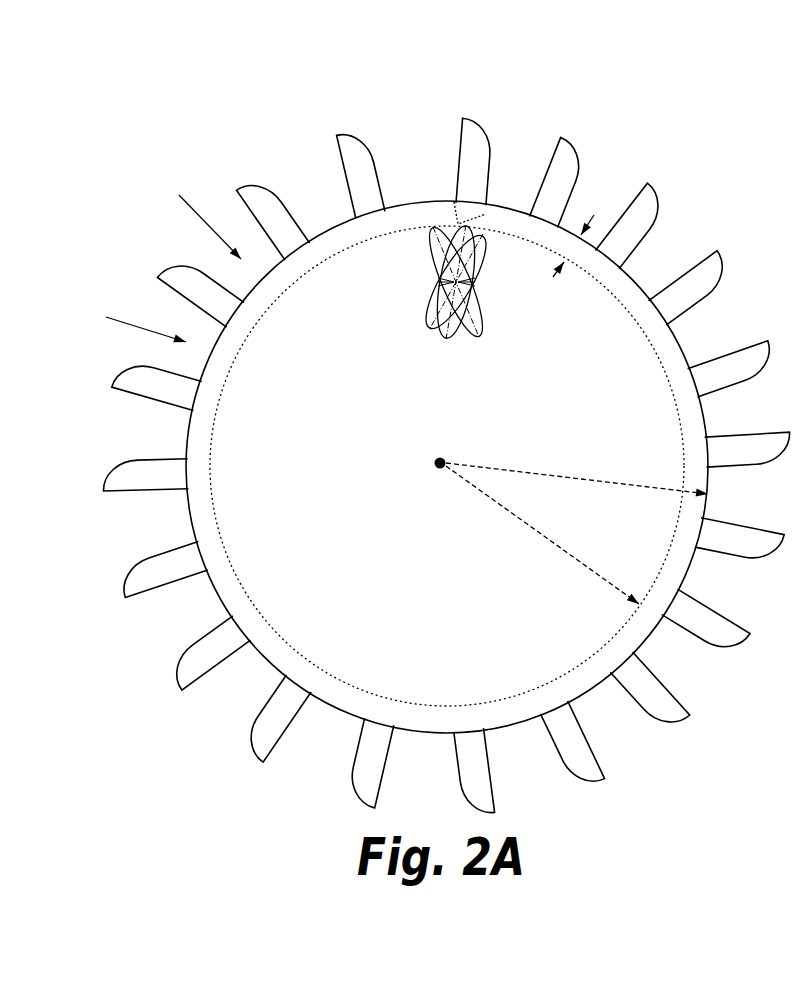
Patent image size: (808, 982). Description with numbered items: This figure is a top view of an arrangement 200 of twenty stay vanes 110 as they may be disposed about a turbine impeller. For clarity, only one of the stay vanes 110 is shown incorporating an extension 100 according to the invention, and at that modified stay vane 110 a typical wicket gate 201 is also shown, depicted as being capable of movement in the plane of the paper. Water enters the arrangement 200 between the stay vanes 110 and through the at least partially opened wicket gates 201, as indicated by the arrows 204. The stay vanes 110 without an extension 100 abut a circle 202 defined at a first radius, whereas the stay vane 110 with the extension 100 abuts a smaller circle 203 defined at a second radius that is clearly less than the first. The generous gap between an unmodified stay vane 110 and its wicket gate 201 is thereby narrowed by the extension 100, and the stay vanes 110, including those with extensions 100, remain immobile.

The arrangement 200 is at (388, 93).
The extension 100 is at (453, 203).
The stay vane 110 is at (347, 182).
The wicket gate 201 is at (428, 245).
The circle 202 is at (684, 343).
The circle 203 is at (672, 393).
The arrows 204 is at (197, 225).